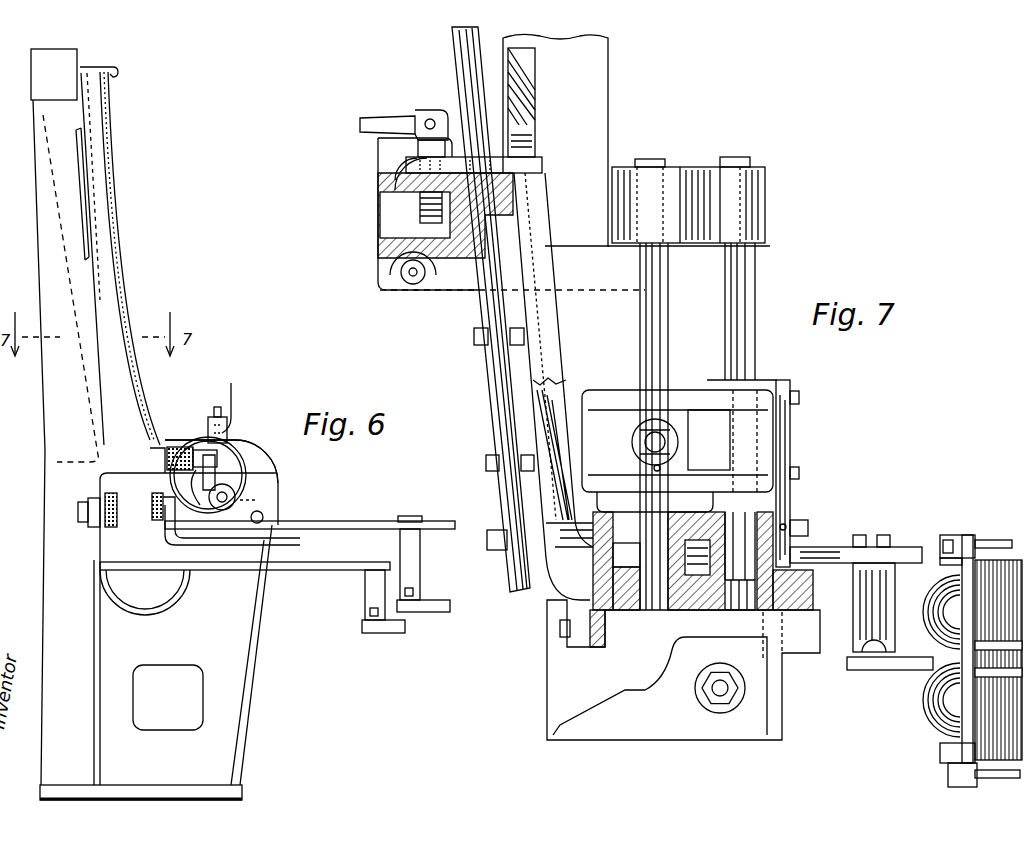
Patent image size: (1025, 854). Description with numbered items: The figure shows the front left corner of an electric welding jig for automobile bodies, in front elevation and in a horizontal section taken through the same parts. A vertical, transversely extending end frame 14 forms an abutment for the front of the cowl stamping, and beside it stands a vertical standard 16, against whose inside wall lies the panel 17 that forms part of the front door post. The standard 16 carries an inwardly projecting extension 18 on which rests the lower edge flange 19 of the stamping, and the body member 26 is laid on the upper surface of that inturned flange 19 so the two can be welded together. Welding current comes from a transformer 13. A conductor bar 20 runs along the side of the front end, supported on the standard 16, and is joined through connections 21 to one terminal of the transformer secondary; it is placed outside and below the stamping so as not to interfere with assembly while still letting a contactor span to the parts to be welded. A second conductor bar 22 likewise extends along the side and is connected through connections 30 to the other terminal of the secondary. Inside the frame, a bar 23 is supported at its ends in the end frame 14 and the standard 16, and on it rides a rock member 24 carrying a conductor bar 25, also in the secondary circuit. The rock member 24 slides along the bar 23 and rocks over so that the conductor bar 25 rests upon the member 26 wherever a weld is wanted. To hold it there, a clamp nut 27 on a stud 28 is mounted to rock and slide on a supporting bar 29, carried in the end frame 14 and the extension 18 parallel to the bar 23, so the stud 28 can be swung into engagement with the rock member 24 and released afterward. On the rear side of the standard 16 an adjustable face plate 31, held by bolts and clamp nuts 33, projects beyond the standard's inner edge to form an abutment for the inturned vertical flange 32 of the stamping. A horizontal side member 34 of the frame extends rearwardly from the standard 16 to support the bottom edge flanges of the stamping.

In FIG. 7, the transformer 13 is at (928, 733).
In FIG. 7, the end frame 14 is at (633, 612).
In FIG. 6, the standard 16 is at (72, 235).
In FIG. 7, the standard 16 is at (380, 256).
In FIG. 6, the panel 17 is at (120, 257).
In FIG. 6, the extension 18 is at (172, 472).
In FIG. 7, the extension 18 is at (688, 193).
In FIG. 6, the lower edge flange 19 is at (145, 506).
In FIG. 6, the conductor bar 20 is at (113, 528).
In FIG. 7, the conductor bar 20 is at (488, 397).
In FIG. 6, the connections 21 is at (325, 566).
In FIG. 6, the conductor bar 22 is at (165, 522).
In FIG. 7, the conductor bar 22 is at (537, 417).
In FIG. 6, the bar 23 is at (263, 514).
In FIG. 7, the bar 23 is at (752, 296).
In FIG. 7, the rock member 24 is at (679, 446).
In FIG. 6, the conductor bar 25 is at (168, 446).
In FIG. 7, the conductor bar 25 is at (790, 440).
In FIG. 6, the member 26 is at (297, 440).
In FIG. 6, the clamp nut 27 is at (233, 428).
In FIG. 7, the clamp nut 27 is at (632, 445).
In FIG. 6, the stud 28 is at (245, 473).
In FIG. 6, the supporting bar 29 is at (209, 482).
In FIG. 7, the supporting bar 29 is at (640, 323).
In FIG. 6, the connections 30 is at (325, 527).
In FIG. 7, the connections 30 is at (912, 550).
In FIG. 7, the face plate 31 is at (543, 165).
In FIG. 7, the inturned vertical flange 32 is at (537, 180).
In FIG. 7, the bolts and clamp nuts 33 is at (429, 110).
In FIG. 7, the side member 34 is at (609, 90).